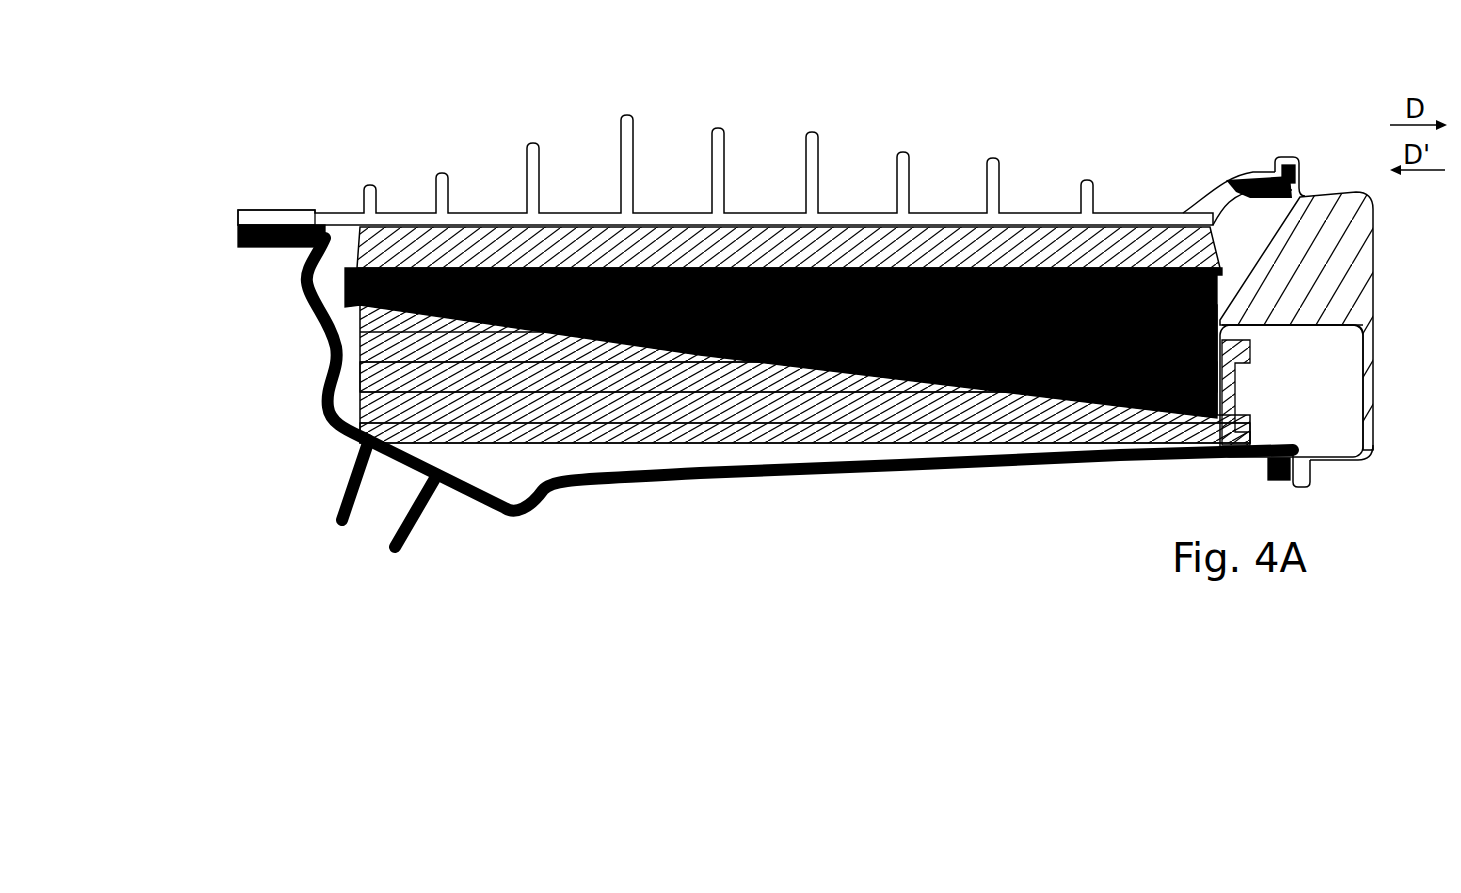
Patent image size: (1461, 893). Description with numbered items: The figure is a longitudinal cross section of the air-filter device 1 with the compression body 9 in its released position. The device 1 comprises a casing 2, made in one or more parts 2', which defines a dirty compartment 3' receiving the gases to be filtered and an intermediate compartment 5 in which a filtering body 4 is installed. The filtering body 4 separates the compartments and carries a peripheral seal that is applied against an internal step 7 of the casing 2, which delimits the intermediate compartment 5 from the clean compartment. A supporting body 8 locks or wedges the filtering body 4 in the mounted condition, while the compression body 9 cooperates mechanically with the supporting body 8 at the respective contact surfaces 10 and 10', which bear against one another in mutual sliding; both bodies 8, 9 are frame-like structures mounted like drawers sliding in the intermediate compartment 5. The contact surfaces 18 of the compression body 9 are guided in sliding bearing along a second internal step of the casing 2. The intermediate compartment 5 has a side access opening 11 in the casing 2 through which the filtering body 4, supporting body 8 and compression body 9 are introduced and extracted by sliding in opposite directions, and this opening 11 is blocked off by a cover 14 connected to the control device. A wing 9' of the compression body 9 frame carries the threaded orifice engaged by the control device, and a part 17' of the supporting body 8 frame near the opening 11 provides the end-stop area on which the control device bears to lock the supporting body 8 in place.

The air-filter device 1 is at (250, 514).
The casing 2 is at (212, 224).
The casing parts 2' is at (234, 226).
The dirty compartment 3' is at (817, 508).
The filtering body 4 is at (703, 250).
The intermediate compartment 5 is at (348, 360).
The internal step 7 is at (912, 208).
The supporting body 8 is at (852, 380).
The compression body 9 is at (805, 444).
The wing 9' is at (1316, 426).
The contact surface 10 is at (783, 413).
The contact surface 10' is at (783, 413).
The side access opening 11 is at (1342, 387).
The cover 14 is at (1350, 257).
The frame part 17' is at (1336, 284).
The contact surfaces 18 is at (681, 455).